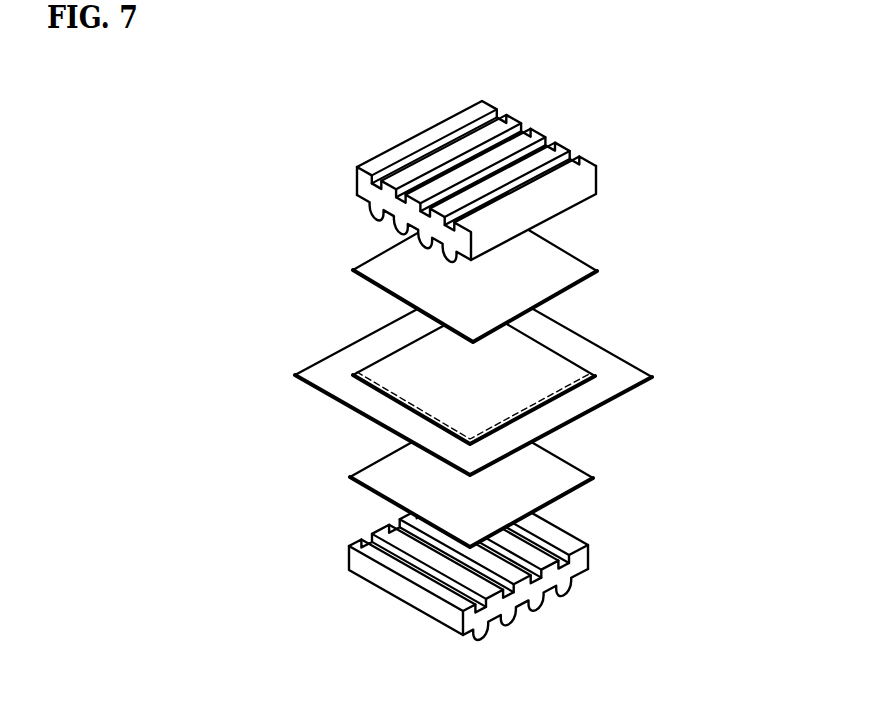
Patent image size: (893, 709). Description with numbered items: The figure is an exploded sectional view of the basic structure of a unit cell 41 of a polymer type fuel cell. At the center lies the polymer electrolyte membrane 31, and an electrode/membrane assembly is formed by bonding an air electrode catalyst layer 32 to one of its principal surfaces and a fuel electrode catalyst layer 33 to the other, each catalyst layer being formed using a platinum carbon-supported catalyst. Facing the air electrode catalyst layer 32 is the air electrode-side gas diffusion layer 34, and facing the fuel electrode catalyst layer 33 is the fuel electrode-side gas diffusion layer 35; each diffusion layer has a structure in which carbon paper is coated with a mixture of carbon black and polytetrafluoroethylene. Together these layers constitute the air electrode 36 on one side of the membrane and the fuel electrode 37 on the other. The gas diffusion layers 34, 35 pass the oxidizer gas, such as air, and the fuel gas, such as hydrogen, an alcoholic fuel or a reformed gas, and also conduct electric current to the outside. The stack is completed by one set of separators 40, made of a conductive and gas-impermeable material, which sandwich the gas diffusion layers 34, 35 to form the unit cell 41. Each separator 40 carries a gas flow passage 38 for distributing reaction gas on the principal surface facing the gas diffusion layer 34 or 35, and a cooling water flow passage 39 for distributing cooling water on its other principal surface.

The polymer electrolyte membrane 31 is at (620, 360).
The air electrode catalyst layer 32 is at (387, 360).
The fuel electrode catalyst layer 33 is at (575, 390).
The air electrode-side gas diffusion layer 34 is at (386, 255).
The fuel electrode-side gas diffusion layer 35 is at (585, 477).
The air electrode 36 is at (468, 321).
The fuel electrode 37 is at (683, 385).
The gas flow passage 38 is at (371, 207).
The cooling water flow passage 39 is at (422, 160).
The separator 40 is at (598, 176).
The unit cell 41 is at (693, 202).